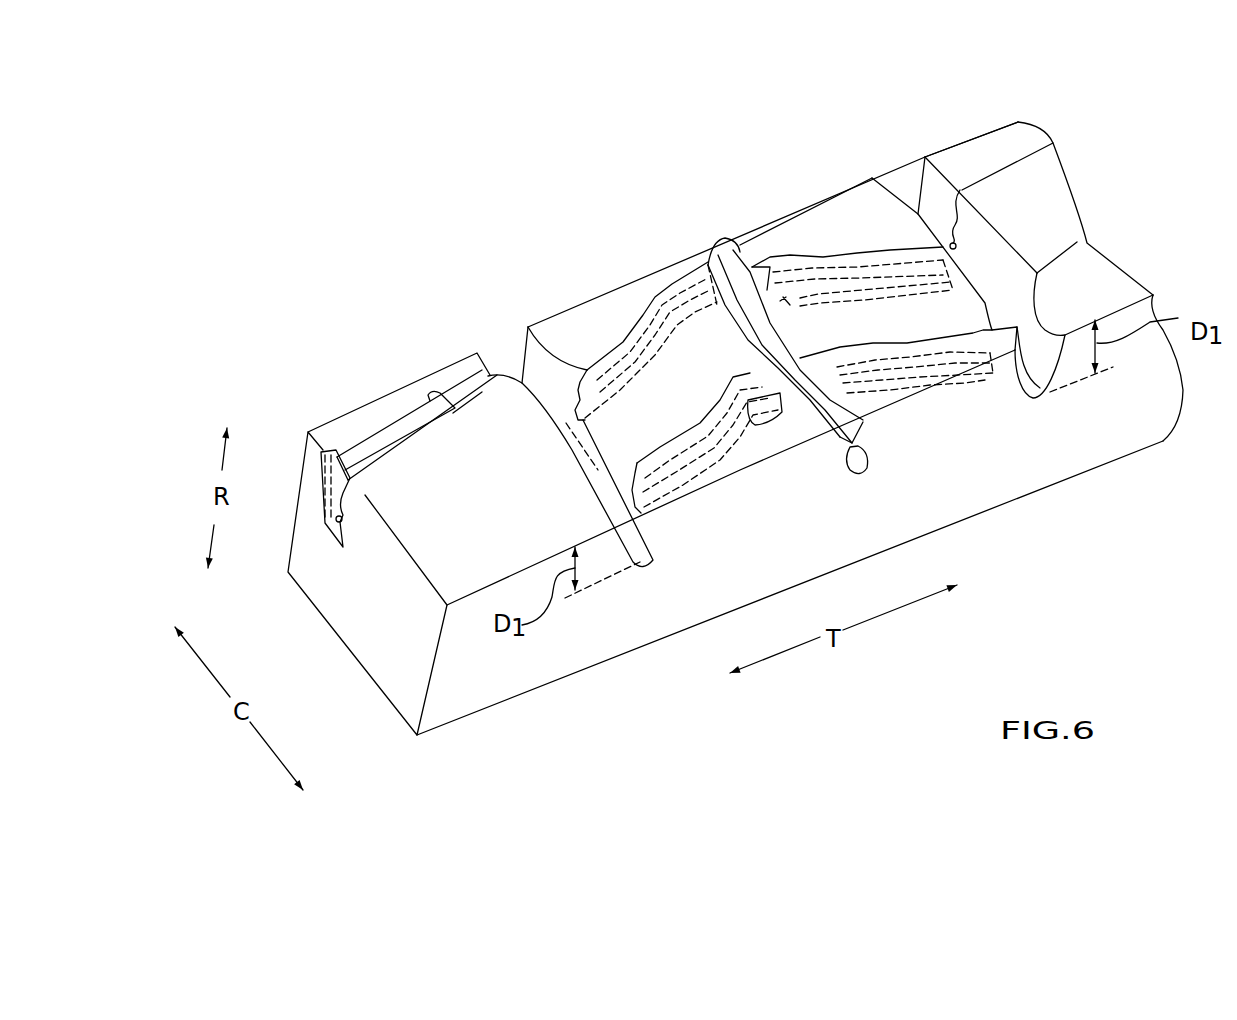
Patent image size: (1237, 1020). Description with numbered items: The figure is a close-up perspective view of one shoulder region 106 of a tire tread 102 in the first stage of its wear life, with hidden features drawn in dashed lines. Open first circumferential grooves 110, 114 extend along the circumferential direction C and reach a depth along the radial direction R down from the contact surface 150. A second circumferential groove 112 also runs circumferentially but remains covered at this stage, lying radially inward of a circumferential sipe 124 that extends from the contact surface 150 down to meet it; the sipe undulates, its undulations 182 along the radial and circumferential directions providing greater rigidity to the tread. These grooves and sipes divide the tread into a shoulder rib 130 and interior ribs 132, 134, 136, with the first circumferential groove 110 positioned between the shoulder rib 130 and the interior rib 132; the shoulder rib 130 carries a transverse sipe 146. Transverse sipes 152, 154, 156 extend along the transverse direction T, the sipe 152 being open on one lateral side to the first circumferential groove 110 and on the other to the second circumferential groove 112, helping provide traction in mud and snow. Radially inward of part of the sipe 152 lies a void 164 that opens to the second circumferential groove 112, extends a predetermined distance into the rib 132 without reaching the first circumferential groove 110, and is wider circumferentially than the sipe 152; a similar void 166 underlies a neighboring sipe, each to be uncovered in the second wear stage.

The tire tread 102 is at (363, 197).
The shoulder region 106 is at (419, 745).
The first circumferential groove 110 is at (505, 357).
The second circumferential groove 112 is at (872, 460).
The first circumferential groove 114 is at (983, 253).
The circumferential sipe 124 is at (732, 262).
The shoulder rib 130 is at (412, 393).
The interior rib 132 is at (595, 310).
The interior rib 134 is at (773, 233).
The interior rib 136 is at (1002, 133).
The transverse sipe 146 is at (390, 440).
The contact surface 150 is at (458, 557).
The transverse sipe 152 is at (670, 437).
The transverse sipe 154 is at (857, 255).
The transverse sipe 156 is at (1062, 248).
The void 164 is at (755, 430).
The void 166 is at (790, 282).
The undulations 182 is at (872, 425).